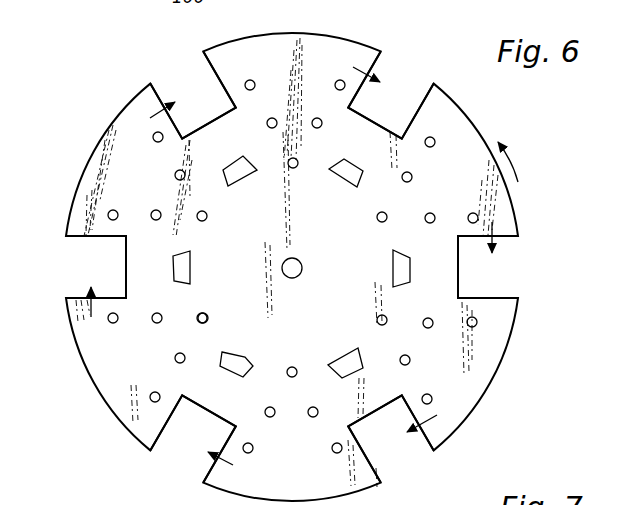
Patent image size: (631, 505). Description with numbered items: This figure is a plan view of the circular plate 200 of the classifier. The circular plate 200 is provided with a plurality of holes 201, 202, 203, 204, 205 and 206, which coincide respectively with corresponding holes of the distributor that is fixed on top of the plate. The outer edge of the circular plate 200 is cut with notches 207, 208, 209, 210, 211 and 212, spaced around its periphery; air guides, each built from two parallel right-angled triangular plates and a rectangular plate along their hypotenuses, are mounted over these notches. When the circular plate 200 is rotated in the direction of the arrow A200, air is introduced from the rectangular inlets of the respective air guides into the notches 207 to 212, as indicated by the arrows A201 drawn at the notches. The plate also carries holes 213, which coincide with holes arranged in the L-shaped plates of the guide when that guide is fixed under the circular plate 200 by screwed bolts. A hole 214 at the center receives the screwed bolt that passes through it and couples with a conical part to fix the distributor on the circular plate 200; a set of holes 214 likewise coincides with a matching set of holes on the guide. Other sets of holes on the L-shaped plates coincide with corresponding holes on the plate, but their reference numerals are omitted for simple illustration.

The circular plate 200 is at (317, 50).
The hole 201 is at (242, 350).
The hole 202 is at (188, 256).
The hole 203 is at (240, 173).
The hole 204 is at (343, 173).
The hole 205 is at (393, 270).
The hole 206 is at (347, 355).
The notch 207 is at (188, 438).
The notch 208 is at (96, 268).
The notch 209 is at (190, 87).
The notch 210 is at (398, 92).
The notch 211 is at (503, 271).
The notch 212 is at (394, 450).
The hole 213 is at (293, 169).
The hole 214 is at (300, 263).
The arrow indicating direction of rotation A200 is at (529, 162).
The arrows indicating air flow A201 is at (497, 230).